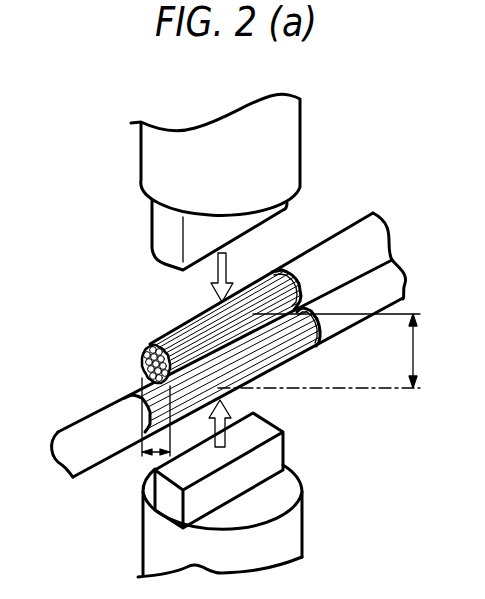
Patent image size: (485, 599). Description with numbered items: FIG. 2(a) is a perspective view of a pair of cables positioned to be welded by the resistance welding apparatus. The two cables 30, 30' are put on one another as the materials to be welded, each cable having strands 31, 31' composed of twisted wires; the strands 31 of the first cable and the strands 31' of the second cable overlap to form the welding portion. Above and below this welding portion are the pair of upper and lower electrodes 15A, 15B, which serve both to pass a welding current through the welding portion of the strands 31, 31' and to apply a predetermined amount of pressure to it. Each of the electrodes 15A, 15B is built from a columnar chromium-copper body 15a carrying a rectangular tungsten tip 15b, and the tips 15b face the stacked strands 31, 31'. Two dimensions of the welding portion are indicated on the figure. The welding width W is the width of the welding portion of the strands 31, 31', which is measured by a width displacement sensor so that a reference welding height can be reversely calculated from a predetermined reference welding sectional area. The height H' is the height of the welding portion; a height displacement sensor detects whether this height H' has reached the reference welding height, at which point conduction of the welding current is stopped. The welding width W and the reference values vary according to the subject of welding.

The upper electrode 15A is at (318, 128).
The lower electrode 15B is at (128, 563).
The columnar chromium-copper body 15a is at (141, 160).
The rectangular tungsten tip 15b is at (152, 232).
The cable 30 is at (213, 397).
The cable 30' is at (271, 257).
The strands 31 is at (246, 369).
The strands 31' is at (221, 327).
The welding width W is at (150, 456).
The height of the welding portion H' is at (332, 351).